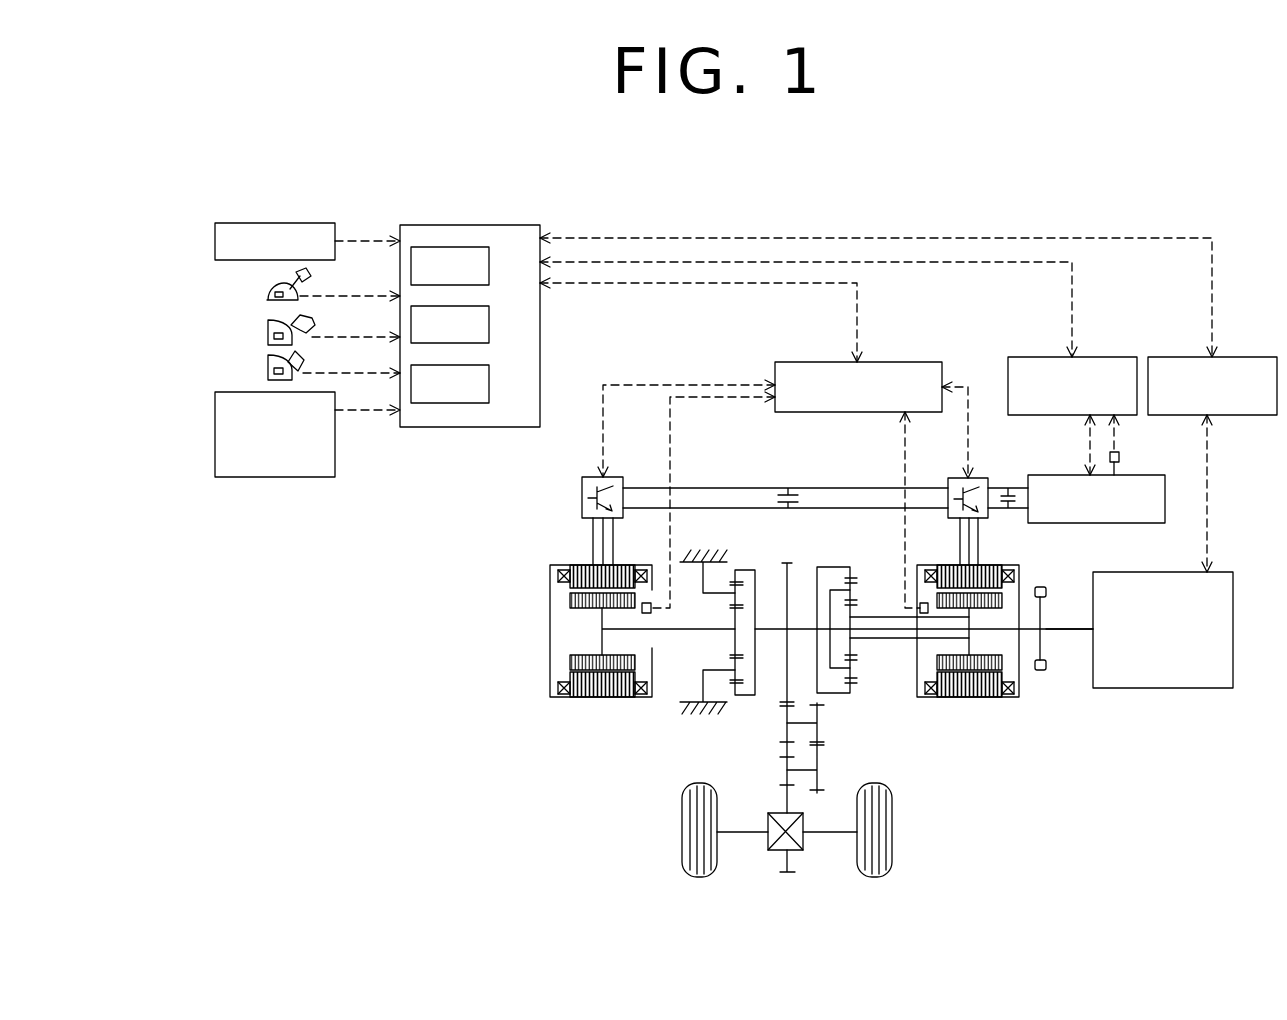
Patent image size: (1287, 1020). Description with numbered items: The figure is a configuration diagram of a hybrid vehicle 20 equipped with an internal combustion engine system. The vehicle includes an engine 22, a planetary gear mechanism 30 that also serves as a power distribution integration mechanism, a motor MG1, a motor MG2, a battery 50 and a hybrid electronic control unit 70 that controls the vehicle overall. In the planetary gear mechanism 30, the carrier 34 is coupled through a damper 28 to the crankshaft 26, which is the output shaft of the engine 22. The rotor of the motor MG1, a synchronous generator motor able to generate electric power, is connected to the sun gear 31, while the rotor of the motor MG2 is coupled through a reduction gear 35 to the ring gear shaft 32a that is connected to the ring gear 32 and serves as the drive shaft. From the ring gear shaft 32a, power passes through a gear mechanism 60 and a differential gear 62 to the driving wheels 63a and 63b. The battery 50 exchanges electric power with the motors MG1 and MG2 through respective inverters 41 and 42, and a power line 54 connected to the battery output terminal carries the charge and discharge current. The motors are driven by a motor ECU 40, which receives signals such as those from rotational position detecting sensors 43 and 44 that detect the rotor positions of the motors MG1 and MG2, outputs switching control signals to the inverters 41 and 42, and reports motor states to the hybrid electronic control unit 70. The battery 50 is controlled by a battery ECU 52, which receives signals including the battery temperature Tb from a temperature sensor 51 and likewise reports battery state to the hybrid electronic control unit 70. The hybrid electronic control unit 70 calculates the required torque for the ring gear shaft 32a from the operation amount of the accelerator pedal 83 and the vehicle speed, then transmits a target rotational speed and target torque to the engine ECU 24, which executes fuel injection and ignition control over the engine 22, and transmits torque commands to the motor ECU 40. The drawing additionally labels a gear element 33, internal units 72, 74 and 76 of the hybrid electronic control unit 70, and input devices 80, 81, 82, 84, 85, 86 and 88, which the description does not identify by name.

The hybrid vehicle 20 is at (1076, 201).
The engine 22 is at (1163, 690).
The engine ECU 24 is at (1236, 355).
The crankshaft 26 is at (1070, 632).
The damper 28 is at (1040, 672).
The planetary gear mechanism 30 is at (892, 621).
The sun gear 31 is at (848, 652).
The ring gear 32 is at (850, 690).
The ring gear shaft 32a is at (772, 612).
The carrier 33 is at (850, 680).
The carrier 34 is at (822, 575).
The reduction gear 35 is at (747, 551).
The motor ECU 40 is at (905, 362).
The inverter 41 is at (988, 480).
The inverter 42 is at (623, 478).
The rotational position detecting sensor 43 is at (908, 565).
The rotational position detecting sensor 44 is at (652, 577).
The battery 50 is at (1030, 525).
The temperature sensor 51 is at (1119, 457).
The battery ECU 52 is at (1108, 355).
The power line 54 is at (823, 488).
The gear mechanism 60 is at (860, 762).
The differential gear 62 is at (768, 822).
The driving wheel 63a is at (682, 818).
The driving wheel 63b is at (892, 818).
The hybrid electronic control unit 70 is at (480, 225).
The CPU 72 is at (490, 268).
The ROM 74 is at (490, 326).
The RAM 76 is at (490, 386).
The ignition switch 80 is at (214, 233).
The shift lever 81 is at (293, 280).
The shift position sensor 82 is at (265, 297).
The accelerator pedal 83 is at (290, 320).
The accelerator pedal position sensor 84 is at (268, 337).
The brake pedal 85 is at (292, 362).
The brake pedal position sensor 86 is at (268, 367).
The vehicle speed sensor 88 is at (215, 424).
The motor MG1 is at (970, 697).
The motor MG2 is at (580, 565).